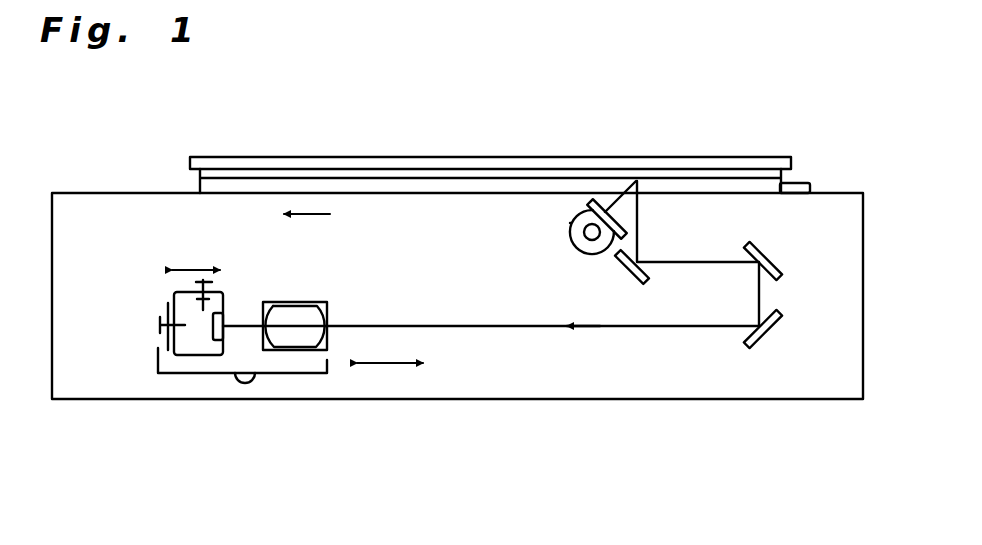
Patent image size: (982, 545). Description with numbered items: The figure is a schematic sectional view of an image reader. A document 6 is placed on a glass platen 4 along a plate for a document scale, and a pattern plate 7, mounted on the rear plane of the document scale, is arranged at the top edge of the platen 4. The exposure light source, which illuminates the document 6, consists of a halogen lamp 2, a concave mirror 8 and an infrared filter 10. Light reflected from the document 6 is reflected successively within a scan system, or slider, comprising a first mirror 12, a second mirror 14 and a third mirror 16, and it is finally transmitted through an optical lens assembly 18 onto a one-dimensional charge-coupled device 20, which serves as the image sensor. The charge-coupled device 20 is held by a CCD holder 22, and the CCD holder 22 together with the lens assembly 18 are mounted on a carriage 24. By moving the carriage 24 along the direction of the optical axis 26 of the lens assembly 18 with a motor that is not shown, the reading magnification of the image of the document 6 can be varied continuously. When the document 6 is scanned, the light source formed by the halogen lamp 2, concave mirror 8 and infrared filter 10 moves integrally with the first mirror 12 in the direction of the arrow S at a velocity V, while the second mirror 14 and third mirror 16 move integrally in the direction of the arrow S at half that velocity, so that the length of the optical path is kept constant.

The halogen lamp 2 is at (575, 248).
The glass platen 4 is at (470, 193).
The document 6 is at (523, 181).
The pattern plate 7 is at (800, 182).
The concave mirror 8 is at (572, 222).
The infrared filter 10 is at (600, 203).
The first mirror 12 is at (641, 282).
The second mirror 14 is at (757, 247).
The third mirror 16 is at (770, 337).
The optical lens assembly 18 is at (293, 337).
The one-dimensional charge-coupled device 20 is at (213, 340).
The CCD holder 22 is at (166, 338).
The carriage 24 is at (315, 373).
The optical axis 26 is at (418, 326).
The arrow S is at (305, 214).